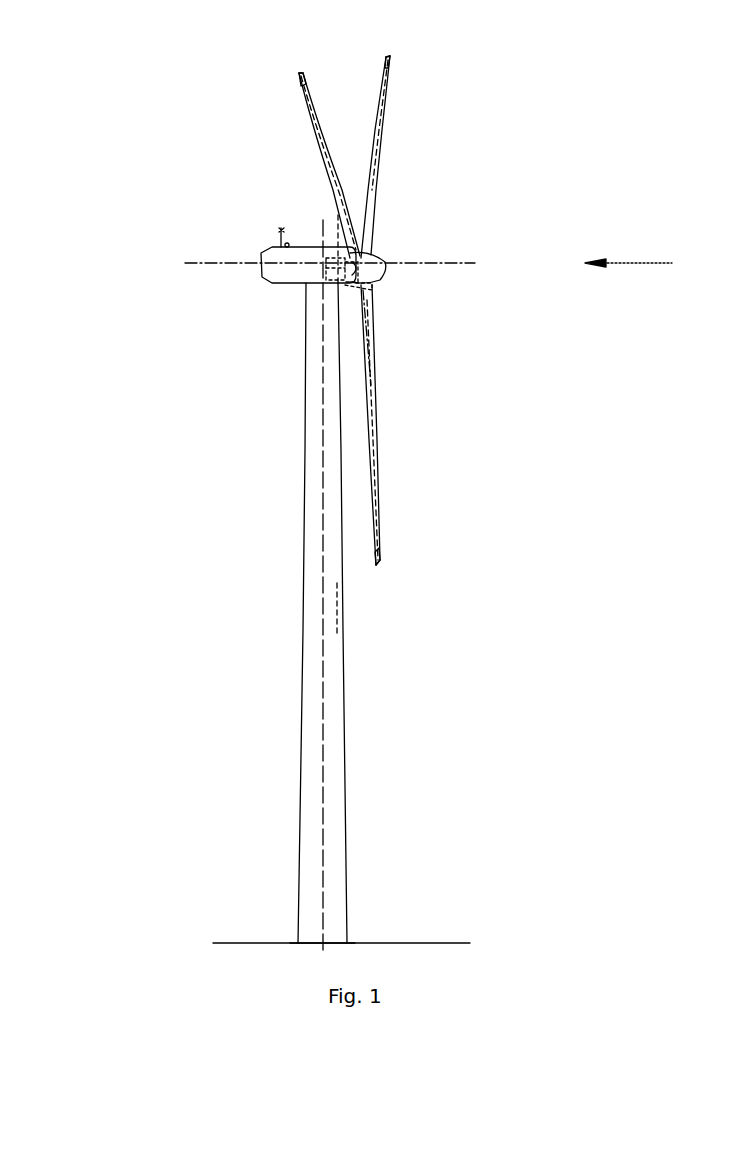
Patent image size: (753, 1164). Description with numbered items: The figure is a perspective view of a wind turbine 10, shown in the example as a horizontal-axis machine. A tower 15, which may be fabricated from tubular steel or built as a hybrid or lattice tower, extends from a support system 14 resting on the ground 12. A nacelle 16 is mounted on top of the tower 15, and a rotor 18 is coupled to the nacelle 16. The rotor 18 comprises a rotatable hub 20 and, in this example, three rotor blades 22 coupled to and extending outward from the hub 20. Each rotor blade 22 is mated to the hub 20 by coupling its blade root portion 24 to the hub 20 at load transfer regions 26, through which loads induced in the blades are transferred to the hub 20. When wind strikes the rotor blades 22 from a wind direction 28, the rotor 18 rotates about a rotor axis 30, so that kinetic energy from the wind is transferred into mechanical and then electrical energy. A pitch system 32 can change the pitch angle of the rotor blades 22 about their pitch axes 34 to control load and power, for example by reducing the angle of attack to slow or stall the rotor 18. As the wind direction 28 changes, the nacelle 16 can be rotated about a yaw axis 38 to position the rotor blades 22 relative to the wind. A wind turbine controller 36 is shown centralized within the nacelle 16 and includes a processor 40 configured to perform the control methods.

The wind turbine 10 is at (118, 83).
The ground 12 is at (232, 942).
The support system 14 is at (291, 942).
The tower 15 is at (318, 590).
The nacelle 16 is at (283, 283).
The rotor 18 is at (394, 179).
The rotatable hub 20 is at (376, 262).
The rotor blade 22 is at (318, 132).
The blade root portion 24 is at (371, 357).
The load transfer regions 26 is at (372, 282).
The wind direction 28 is at (640, 263).
The rotor axis 30 is at (470, 268).
The pitch system 32 is at (362, 300).
The pitch axes 34 is at (299, 78).
The wind turbine controller 36 is at (318, 290).
The yaw axis 38 is at (324, 648).
The processor 40 is at (326, 222).